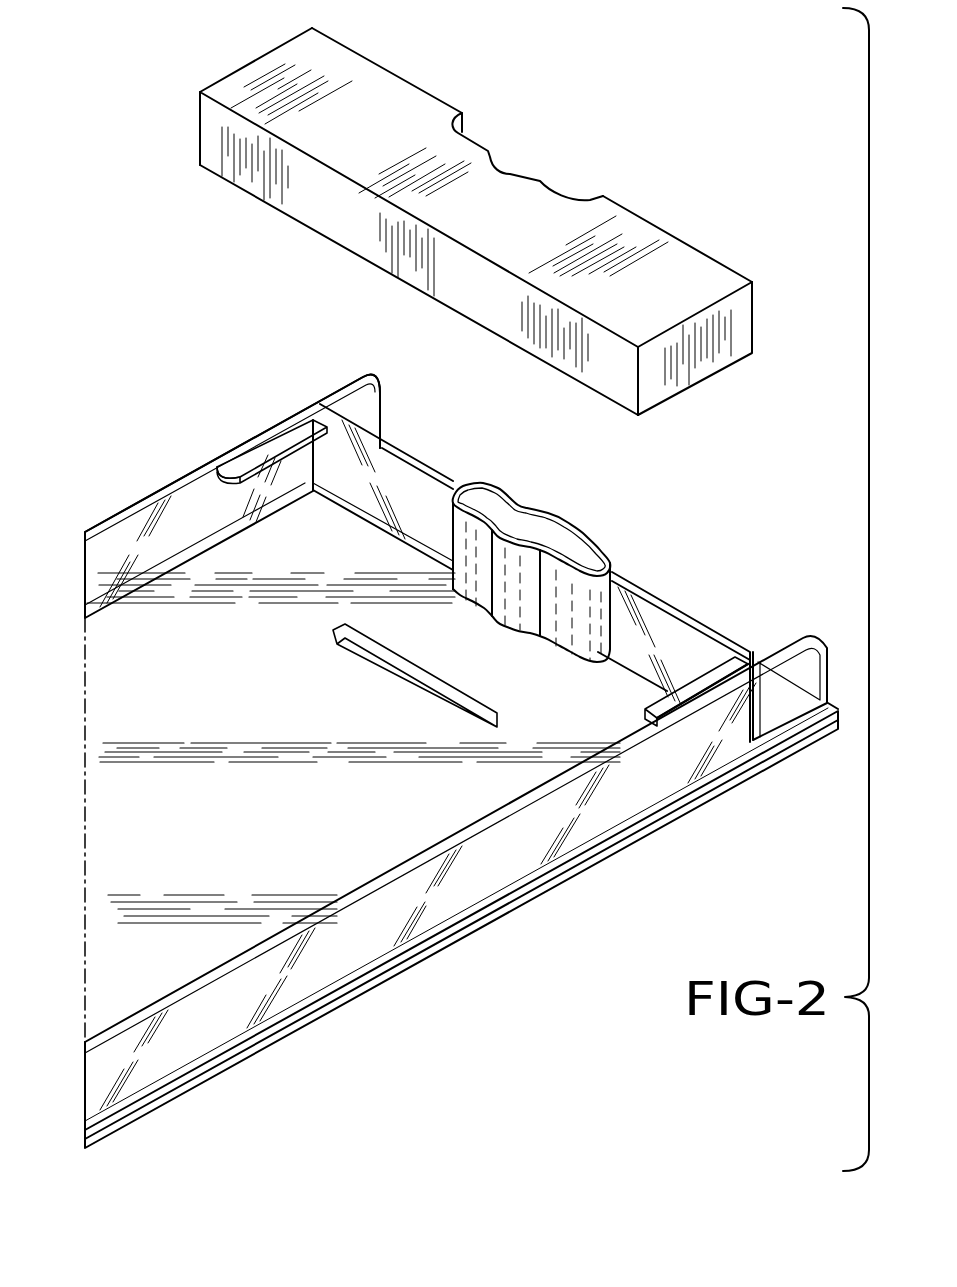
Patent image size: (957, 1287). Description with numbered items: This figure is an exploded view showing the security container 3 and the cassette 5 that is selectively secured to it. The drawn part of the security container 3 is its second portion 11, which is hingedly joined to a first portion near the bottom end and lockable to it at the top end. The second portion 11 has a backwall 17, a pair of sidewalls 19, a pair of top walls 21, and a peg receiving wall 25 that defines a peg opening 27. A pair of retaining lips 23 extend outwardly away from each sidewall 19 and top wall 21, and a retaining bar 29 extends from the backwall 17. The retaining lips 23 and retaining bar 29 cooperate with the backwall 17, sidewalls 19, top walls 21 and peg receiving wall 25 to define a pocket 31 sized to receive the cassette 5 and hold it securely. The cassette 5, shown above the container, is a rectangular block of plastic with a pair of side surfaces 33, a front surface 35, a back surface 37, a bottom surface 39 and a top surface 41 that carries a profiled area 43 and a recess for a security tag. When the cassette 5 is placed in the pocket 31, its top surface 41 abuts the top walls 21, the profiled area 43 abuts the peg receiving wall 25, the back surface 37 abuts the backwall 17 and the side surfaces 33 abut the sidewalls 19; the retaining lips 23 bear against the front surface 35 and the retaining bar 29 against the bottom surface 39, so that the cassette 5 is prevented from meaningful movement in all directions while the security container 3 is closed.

The security container 3 is at (163, 462).
The cassette 5 is at (236, 42).
The second portion 11 is at (503, 925).
The backwall 17 is at (305, 714).
The sidewalls 19 is at (157, 490).
The top walls 21 is at (400, 472).
The retaining lips 23 is at (293, 430).
The peg receiving wall 25 is at (560, 630).
The peg opening 27 is at (555, 532).
The retaining bar 29 is at (410, 668).
The pocket 31 is at (268, 528).
The side surfaces 33 is at (232, 74).
The front surface 35 is at (400, 142).
The back surface 37 is at (375, 267).
The bottom surface 39 is at (340, 222).
The top surface 41 is at (362, 57).
The profiled area 43 is at (510, 170).